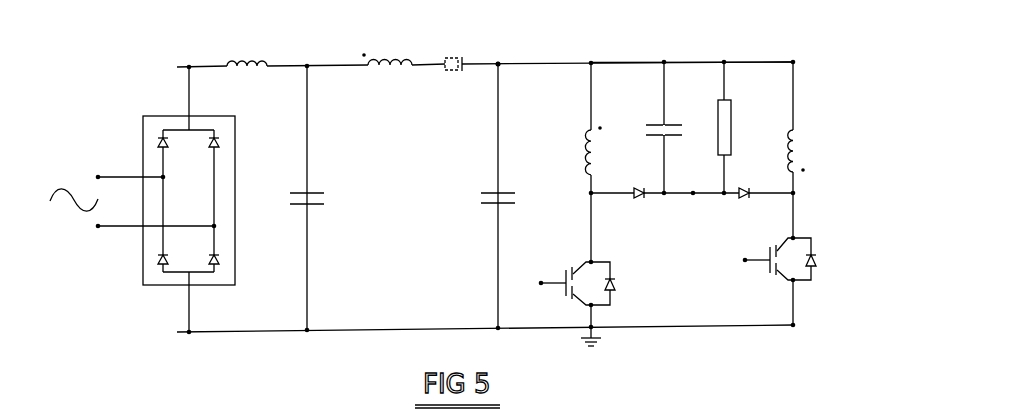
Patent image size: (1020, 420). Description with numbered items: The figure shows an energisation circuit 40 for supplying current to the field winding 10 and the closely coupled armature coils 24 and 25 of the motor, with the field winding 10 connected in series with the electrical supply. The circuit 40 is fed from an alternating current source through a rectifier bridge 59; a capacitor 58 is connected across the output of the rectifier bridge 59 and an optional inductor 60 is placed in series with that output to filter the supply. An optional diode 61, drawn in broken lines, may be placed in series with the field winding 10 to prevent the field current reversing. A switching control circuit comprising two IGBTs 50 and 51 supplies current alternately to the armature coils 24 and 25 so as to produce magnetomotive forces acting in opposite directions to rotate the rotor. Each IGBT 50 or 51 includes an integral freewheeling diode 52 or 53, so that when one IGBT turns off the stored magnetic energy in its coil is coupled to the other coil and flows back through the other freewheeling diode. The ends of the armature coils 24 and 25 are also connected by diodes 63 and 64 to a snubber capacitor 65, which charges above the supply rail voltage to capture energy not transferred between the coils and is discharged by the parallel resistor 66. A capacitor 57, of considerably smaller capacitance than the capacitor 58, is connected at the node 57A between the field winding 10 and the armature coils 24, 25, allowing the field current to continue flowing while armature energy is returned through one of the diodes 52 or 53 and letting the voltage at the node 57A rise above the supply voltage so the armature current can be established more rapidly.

The field winding 10 is at (387, 60).
The armature coil 24 is at (589, 158).
The armature coil 25 is at (797, 138).
The energisation circuit 40 is at (724, 56).
The IGBT 50 is at (567, 278).
The IGBT 51 is at (773, 270).
The freewheeling diode 52 is at (614, 283).
The freewheeling diode 53 is at (818, 258).
The capacitor 57 is at (490, 207).
The node 57A is at (500, 63).
The capacitor 58 is at (312, 207).
The rectifier bridge 59 is at (143, 153).
The inductor 60 is at (232, 62).
The diode 61 is at (458, 57).
The diode 63 is at (641, 199).
The diode 64 is at (744, 199).
The snubber capacitor 65 is at (648, 125).
The parallel resistor 66 is at (732, 128).